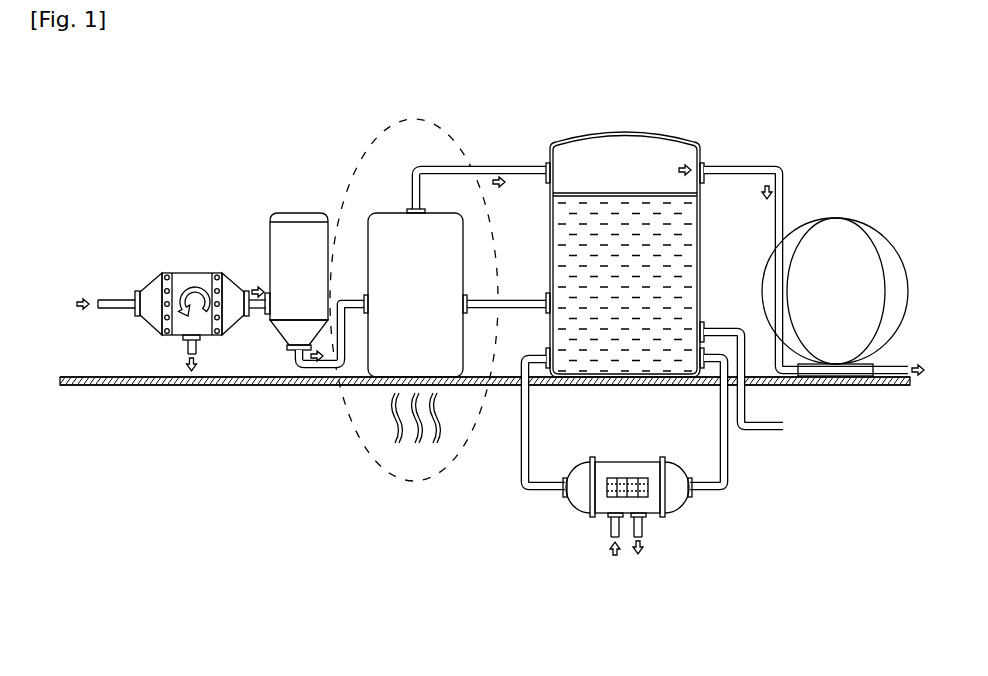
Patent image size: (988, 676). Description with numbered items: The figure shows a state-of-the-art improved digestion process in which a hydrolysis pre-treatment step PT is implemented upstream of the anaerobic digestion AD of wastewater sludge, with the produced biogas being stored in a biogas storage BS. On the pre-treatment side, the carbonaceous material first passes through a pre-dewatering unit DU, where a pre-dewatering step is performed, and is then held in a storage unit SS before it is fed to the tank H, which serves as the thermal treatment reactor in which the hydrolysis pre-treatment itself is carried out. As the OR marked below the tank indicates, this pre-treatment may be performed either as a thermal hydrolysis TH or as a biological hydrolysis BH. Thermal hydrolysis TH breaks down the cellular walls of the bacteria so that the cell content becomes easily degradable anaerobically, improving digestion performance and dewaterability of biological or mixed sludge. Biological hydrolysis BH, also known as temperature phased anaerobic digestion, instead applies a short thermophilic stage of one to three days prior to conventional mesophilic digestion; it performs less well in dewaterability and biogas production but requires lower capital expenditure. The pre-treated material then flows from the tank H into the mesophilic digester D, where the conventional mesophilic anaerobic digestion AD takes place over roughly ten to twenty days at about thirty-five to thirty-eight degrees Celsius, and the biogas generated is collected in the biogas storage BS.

The hydrolysis pre-treatment step PT is at (547, 125).
The anaerobic digestion AD is at (705, 112).
The biogas storage BS is at (908, 110).
The pre-dewatering unit DU is at (183, 272).
The storage unit SS is at (294, 243).
The tank H is at (455, 273).
The mesophilic digester D is at (625, 254).
The thermal hydrolysis TH is at (419, 483).
The alternative (or) OR is at (420, 552).
The biological hydrolysis BH is at (419, 572).